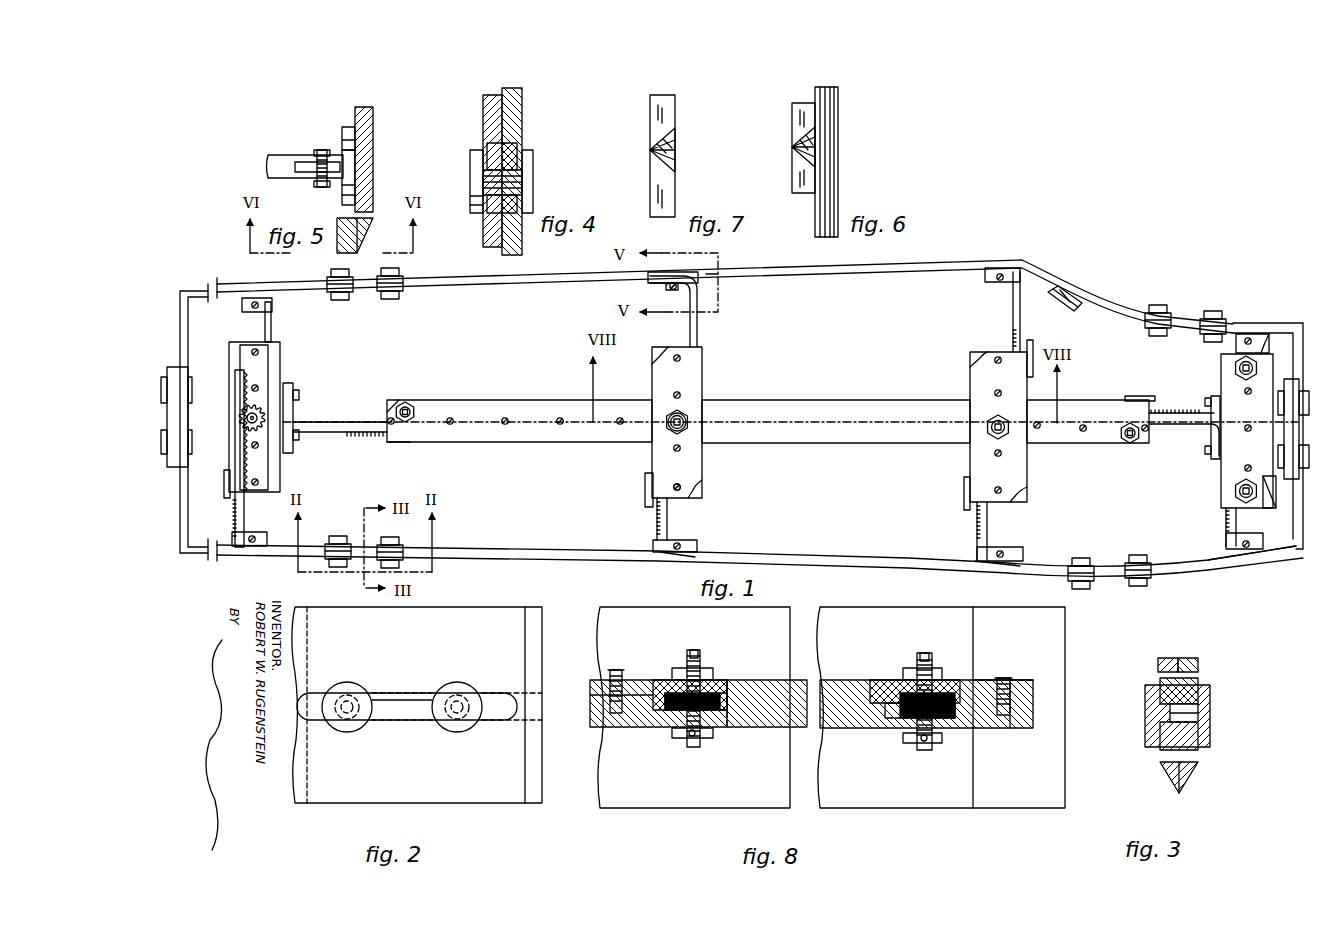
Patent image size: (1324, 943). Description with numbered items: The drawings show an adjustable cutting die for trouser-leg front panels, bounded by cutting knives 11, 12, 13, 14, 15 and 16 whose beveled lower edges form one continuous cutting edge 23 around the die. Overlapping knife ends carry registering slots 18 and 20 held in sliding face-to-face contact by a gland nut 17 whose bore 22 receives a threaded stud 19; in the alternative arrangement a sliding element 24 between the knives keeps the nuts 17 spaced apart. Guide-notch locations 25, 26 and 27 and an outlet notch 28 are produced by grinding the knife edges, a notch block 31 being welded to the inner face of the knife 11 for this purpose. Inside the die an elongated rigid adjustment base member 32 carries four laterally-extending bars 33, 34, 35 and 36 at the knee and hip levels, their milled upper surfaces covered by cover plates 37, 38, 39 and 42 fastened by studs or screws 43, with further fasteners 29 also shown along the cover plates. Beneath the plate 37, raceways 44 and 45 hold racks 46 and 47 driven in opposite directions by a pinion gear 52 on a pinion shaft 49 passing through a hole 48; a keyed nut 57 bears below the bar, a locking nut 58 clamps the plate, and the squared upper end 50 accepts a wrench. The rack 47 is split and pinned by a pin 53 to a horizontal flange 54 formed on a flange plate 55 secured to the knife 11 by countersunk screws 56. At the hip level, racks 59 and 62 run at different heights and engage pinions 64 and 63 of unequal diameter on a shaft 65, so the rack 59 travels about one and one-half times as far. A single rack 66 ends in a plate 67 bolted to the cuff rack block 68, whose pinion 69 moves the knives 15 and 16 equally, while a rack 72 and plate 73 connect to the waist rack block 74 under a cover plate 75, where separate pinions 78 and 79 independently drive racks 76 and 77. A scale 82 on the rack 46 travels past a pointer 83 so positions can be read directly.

In FIG. 1, the cutting knife 11 is at (950, 254).
In FIG. 5, the cutting knife 11 is at (373, 118).
In FIG. 6, the cutting knife 11 is at (838, 112).
In FIG. 1, the cutting knife 12 is at (1254, 315).
In FIG. 1, the cutting knife 13 is at (1268, 545).
In FIG. 1, the cutting knife 14 is at (890, 550).
In FIG. 4, the cutting knife 14 is at (483, 115).
In FIG. 7, the cutting knife 14 is at (675, 115).
In FIG. 2, the cutting knife 14 is at (537, 640).
In FIG. 3, the cutting knife 14 is at (1160, 658).
In FIG. 1, the cutting knife 15 is at (237, 548).
In FIG. 4, the cutting knife 15 is at (520, 116).
In FIG. 2, the cutting knife 15 is at (487, 618).
In FIG. 3, the cutting knife 15 is at (1192, 658).
In FIG. 1, the cutting knife 16 is at (189, 283).
In FIG. 1, the gland nut 17 is at (317, 552).
In FIG. 4, the gland nut 17 is at (533, 172).
In FIG. 2, the gland nut 17 is at (462, 685).
In FIG. 3, the gland nut 17 is at (1210, 700).
In FIG. 4, the slot 18 is at (528, 156).
In FIG. 2, the slot 18 is at (408, 693).
In FIG. 3, the slot 18 is at (1160, 750).
In FIG. 1, the stud 19 is at (377, 532).
In FIG. 4, the stud 19 is at (470, 185).
In FIG. 3, the stud 19 is at (1148, 733).
In FIG. 2, the slot 20 is at (535, 700).
In FIG. 2, the bore 22 is at (460, 722).
In FIG. 3, the bore 22 is at (1195, 727).
In FIG. 3, the cutting edge 23 is at (1185, 795).
In FIG. 4, the sliding element 24 is at (515, 150).
In FIG. 1, the notch location 25 is at (710, 262).
In FIG. 6, the notch location 25 is at (815, 143).
In FIG. 1, the notch location 26 is at (660, 548).
In FIG. 7, the notch location 26 is at (675, 147).
In FIG. 1, the notch location 27 is at (992, 558).
In FIG. 1, the outlet notch 28 is at (1064, 287).
In FIG. 1, the screw 29 is at (611, 417).
In FIG. 8, the screw 29 is at (618, 670).
In FIG. 1, the notch block 31 is at (1062, 292).
In FIG. 5, the notch block 31 is at (337, 247).
In FIG. 6, the notch block 31 is at (792, 133).
In FIG. 1, the adjustment base member 32 is at (394, 392).
In FIG. 8, the adjustment base member 32 is at (797, 680).
In FIG. 1, the laterally-extending bar 33 is at (644, 352).
In FIG. 1, the laterally-extending bar 34 is at (694, 489).
In FIG. 1, the laterally-extending bar 35 is at (967, 352).
In FIG. 1, the laterally-extending bar 36 is at (1019, 484).
In FIG. 1, the cover plate 37 is at (689, 352).
In FIG. 8, the cover plate 37 is at (722, 680).
In FIG. 1, the cover plate 38 is at (962, 378).
In FIG. 8, the cover plate 38 is at (885, 680).
In FIG. 1, the cover plate 39 is at (512, 392).
In FIG. 8, the cover plate 39 is at (590, 680).
In FIG. 1, the cover plate 42 is at (1089, 394).
In FIG. 8, the cover plate 42 is at (1024, 680).
In FIG. 1, the studs or screws 43 is at (666, 479).
In FIG. 8, the raceway 44 is at (662, 712).
In FIG. 8, the raceway 45 is at (724, 712).
In FIG. 1, the rack 46 is at (647, 535).
In FIG. 8, the rack 46 is at (672, 712).
In FIG. 1, the rack 47 is at (690, 310).
In FIG. 5, the rack 47 is at (268, 162).
In FIG. 8, the rack 47 is at (715, 714).
In FIG. 8, the hole 48 is at (702, 712).
In FIG. 1, the pinion shaft 49 is at (674, 407).
In FIG. 8, the pinion shaft 49 is at (684, 680).
In FIG. 8, the upper end of pinion shaft 50 is at (693, 650).
In FIG. 8, the pinion gear 52 is at (678, 712).
In FIG. 1, the pin 53 is at (657, 278).
In FIG. 5, the pin 53 is at (318, 150).
In FIG. 5, the horizontal flange 54 is at (323, 187).
In FIG. 1, the flange plate 55 is at (640, 269).
In FIG. 5, the flange plate 55 is at (342, 145).
In FIG. 5, the countersunk screws 56 is at (373, 136).
In FIG. 8, the nut 57 is at (686, 738).
In FIG. 1, the locking nut 58 is at (682, 410).
In FIG. 8, the locking nut 58 is at (710, 668).
In FIG. 1, the rack 59 is at (969, 527).
In FIG. 8, the rack 59 is at (890, 718).
In FIG. 1, the rack 62 is at (1014, 300).
In FIG. 8, the rack 62 is at (985, 728).
In FIG. 8, the pinion 63 is at (905, 720).
In FIG. 8, the pinion 64 is at (940, 740).
In FIG. 8, the pinion shaft 65 is at (925, 750).
In FIG. 1, the rack 66 is at (329, 414).
In FIG. 1, the plate 67 is at (285, 404).
In FIG. 1, the cuff rack block 68 is at (274, 462).
In FIG. 1, the pinion 69 is at (262, 377).
In FIG. 1, the rack 72 is at (1187, 403).
In FIG. 1, the plate 73 is at (1203, 422).
In FIG. 1, the waist rack block 74 is at (1264, 496).
In FIG. 1, the cover plate 75 is at (1220, 462).
In FIG. 1, the rack 76 is at (1228, 337).
In FIG. 1, the rack 77 is at (1218, 531).
In FIG. 1, the pinion 78 is at (1227, 359).
In FIG. 1, the pinion 79 is at (1227, 491).
In FIG. 1, the scale 82 is at (649, 505).
In FIG. 1, the pointer 83 is at (637, 490).